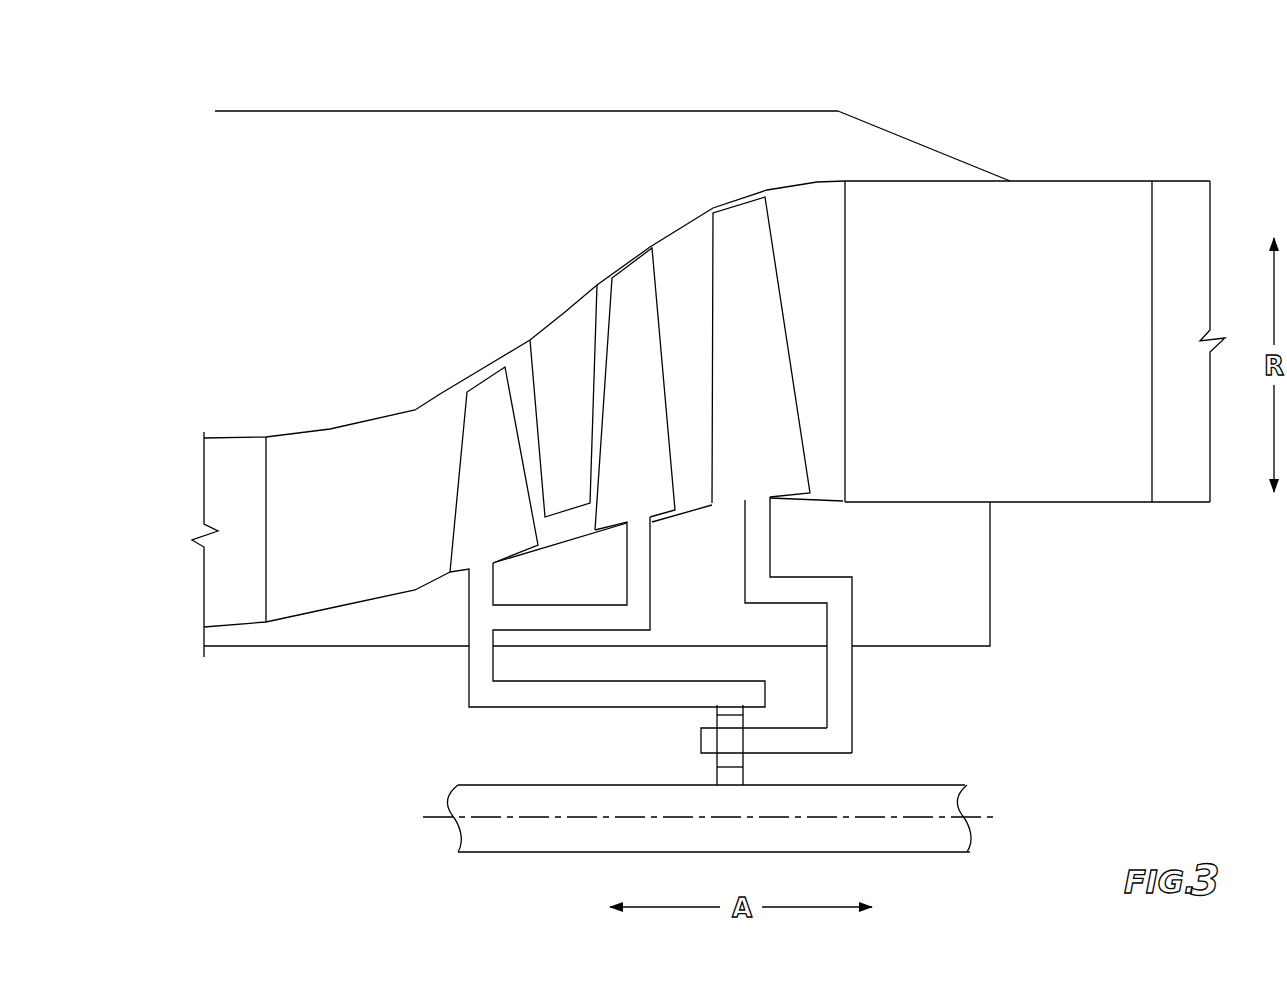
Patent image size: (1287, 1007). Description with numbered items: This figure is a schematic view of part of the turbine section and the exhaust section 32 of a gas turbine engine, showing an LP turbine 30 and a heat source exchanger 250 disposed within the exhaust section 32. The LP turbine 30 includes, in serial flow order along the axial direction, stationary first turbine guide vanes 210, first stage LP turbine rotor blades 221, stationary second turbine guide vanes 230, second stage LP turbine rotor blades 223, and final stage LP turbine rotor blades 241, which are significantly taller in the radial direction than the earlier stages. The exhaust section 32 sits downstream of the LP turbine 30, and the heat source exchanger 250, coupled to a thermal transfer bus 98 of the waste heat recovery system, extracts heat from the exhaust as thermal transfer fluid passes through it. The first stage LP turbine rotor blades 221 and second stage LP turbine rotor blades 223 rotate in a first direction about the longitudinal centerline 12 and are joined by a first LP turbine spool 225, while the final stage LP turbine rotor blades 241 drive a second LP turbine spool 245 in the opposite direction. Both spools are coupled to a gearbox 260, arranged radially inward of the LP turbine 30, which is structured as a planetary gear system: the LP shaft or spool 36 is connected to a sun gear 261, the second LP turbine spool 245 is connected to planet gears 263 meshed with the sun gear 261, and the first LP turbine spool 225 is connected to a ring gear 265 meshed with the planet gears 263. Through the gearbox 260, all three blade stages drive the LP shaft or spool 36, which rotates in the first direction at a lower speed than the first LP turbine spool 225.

The longitudinal centerline 12 is at (983, 817).
The LP turbine 30 is at (453, 332).
The exhaust section 32 is at (1103, 118).
The LP shaft or spool 36 is at (922, 798).
The thermal transfer bus 98 is at (528, 112).
The first turbine guide vanes 210 is at (321, 539).
The first stage LP turbine rotor blades 221 is at (471, 506).
The second stage LP turbine rotor blades 223 is at (616, 419).
The first LP turbine spool 225 is at (470, 675).
The second turbine guide vanes 230 is at (546, 389).
The final stage LP turbine rotor blades 241 is at (736, 419).
The second LP turbine spool 245 is at (853, 617).
The heat source exchanger 250 is at (976, 348).
The gearbox 260 is at (608, 752).
The sun gear 261 is at (717, 773).
The planet gears 263 is at (737, 758).
The ring gear 265 is at (715, 709).